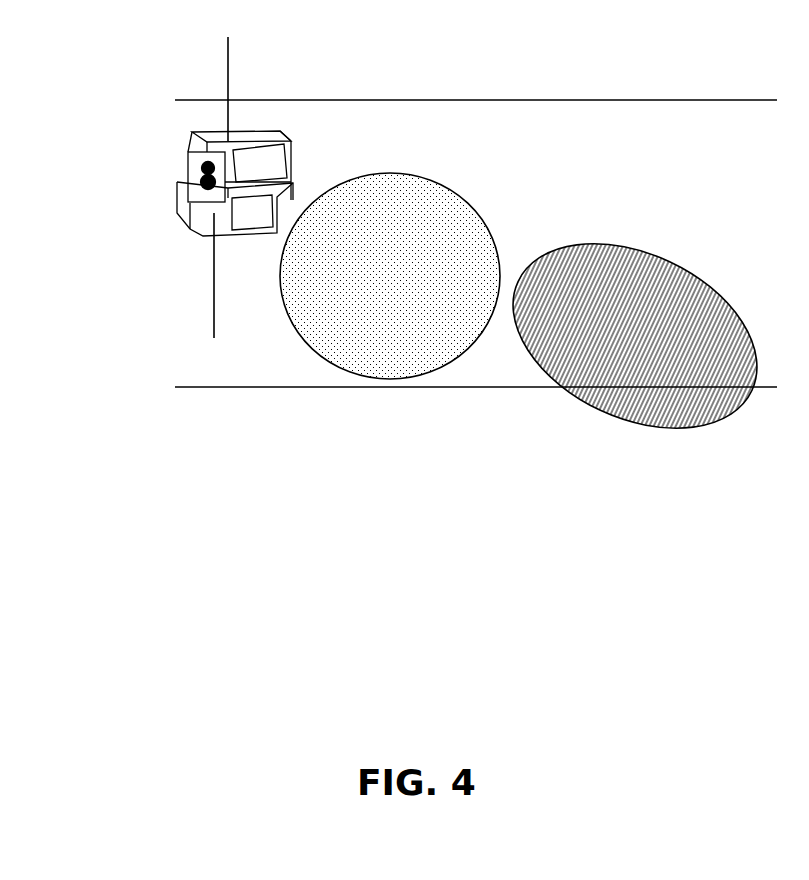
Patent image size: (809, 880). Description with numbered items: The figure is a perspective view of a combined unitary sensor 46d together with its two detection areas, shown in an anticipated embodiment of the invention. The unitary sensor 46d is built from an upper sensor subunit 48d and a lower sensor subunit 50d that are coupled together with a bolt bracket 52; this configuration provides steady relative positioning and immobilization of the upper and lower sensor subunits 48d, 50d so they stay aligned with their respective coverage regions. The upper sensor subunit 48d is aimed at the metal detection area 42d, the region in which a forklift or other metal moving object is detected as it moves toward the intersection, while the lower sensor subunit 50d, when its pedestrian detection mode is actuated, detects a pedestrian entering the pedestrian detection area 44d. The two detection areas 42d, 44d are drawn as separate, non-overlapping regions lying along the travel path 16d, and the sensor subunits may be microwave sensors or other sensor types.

The aisle / travel path 16d is at (637, 173).
The metal detection area 42d is at (614, 400).
The pedestrian detection area 44d is at (377, 350).
The combined unitary sensor 46d is at (243, 172).
The upper sensor subunit 48d is at (210, 83).
The lower sensor subunit 50d is at (210, 286).
The bolt bracket 52 is at (195, 185).